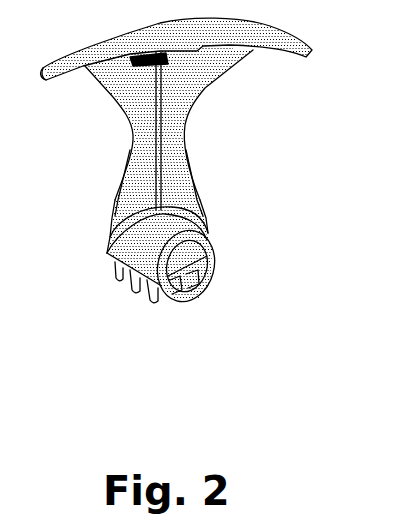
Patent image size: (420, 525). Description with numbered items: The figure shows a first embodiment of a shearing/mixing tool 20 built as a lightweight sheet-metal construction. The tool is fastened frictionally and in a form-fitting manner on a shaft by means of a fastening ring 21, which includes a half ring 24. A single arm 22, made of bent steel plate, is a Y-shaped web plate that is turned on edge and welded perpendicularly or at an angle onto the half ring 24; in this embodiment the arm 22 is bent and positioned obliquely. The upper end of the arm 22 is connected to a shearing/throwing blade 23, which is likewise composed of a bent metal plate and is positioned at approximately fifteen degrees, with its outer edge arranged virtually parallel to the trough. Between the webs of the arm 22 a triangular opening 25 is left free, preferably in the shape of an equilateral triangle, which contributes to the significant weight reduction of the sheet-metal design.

The shearing/mixing tool 20 is at (200, 190).
The fastening ring 21 is at (204, 280).
The arm 22 is at (197, 112).
The shearing/throwing blade 23 is at (303, 42).
The half ring 24 is at (214, 255).
The triangular opening 25 is at (140, 60).